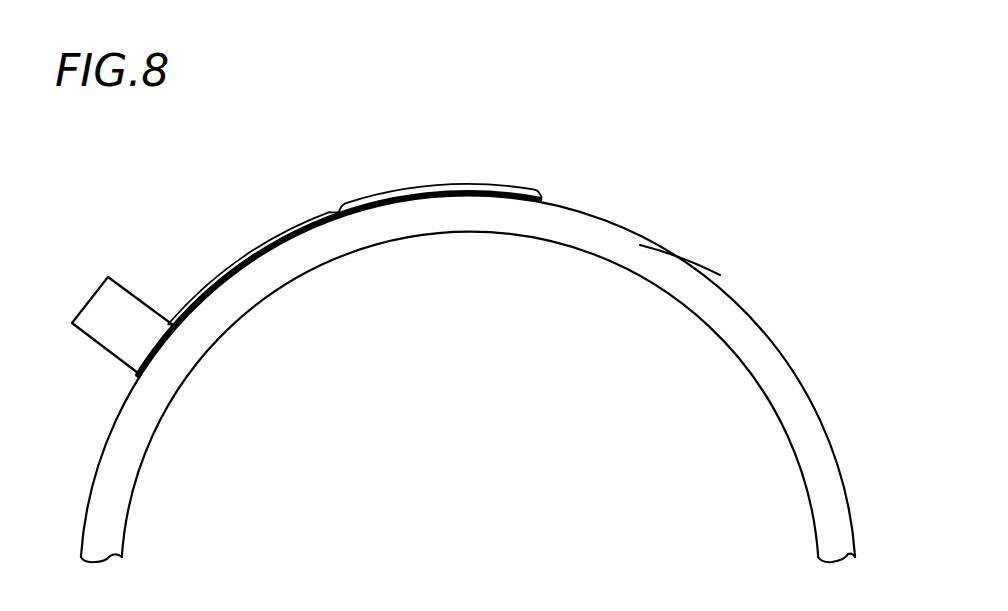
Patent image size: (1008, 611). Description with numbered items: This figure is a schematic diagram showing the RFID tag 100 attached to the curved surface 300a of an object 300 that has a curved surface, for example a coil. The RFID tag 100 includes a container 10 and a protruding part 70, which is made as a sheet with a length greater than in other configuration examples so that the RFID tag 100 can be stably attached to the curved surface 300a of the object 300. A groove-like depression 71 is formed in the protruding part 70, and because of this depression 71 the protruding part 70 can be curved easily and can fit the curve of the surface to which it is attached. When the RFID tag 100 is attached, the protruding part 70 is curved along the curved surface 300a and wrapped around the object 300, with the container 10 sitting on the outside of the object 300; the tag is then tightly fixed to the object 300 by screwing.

The container 10 is at (110, 337).
The protruding part 70 is at (520, 196).
The depression 71 is at (337, 207).
The RFID tag 100 is at (291, 252).
The object 300 is at (830, 488).
The curved surface 300a is at (679, 256).